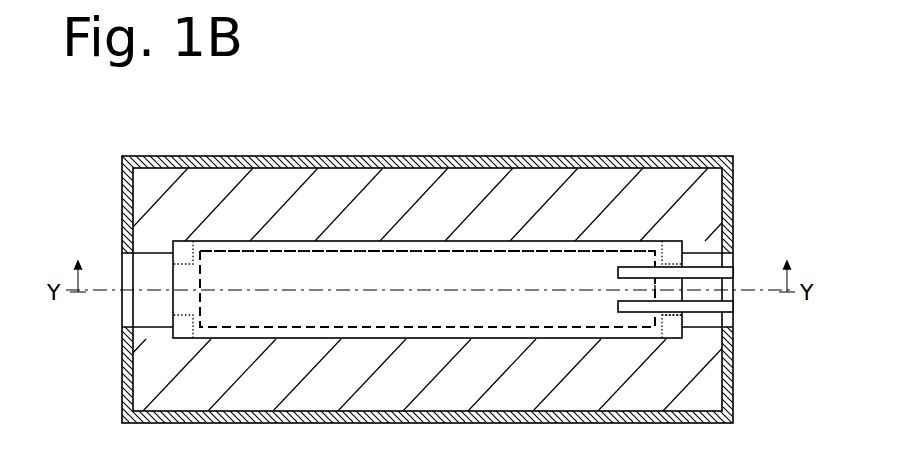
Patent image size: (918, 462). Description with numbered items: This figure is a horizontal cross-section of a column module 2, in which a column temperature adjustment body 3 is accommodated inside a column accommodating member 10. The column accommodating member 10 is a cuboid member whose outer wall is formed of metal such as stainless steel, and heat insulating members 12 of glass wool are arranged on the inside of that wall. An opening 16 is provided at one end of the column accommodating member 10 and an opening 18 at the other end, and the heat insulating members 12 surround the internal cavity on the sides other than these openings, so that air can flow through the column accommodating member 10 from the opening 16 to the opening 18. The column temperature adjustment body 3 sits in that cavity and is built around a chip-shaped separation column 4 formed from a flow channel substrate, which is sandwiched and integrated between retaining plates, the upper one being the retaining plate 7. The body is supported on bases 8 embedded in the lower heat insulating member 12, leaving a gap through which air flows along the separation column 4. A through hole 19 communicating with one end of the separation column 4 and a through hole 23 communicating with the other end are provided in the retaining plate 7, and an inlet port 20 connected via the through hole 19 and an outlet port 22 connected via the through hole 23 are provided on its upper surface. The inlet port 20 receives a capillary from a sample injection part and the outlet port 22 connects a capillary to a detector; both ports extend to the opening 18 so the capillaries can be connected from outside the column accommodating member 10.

The column module 2 is at (714, 150).
The column temperature adjustment body 3 is at (665, 168).
The separation column 4 is at (380, 251).
The retaining plate 7 is at (428, 250).
The bases 8 is at (670, 330).
The column accommodating member 10 is at (602, 156).
The heat insulating members 12 is at (502, 190).
The opening 16 is at (128, 307).
The opening 18 is at (727, 261).
The through hole 19 is at (638, 268).
The inlet port 20 is at (727, 273).
The outlet port 22 is at (725, 307).
The through hole 23 is at (662, 317).